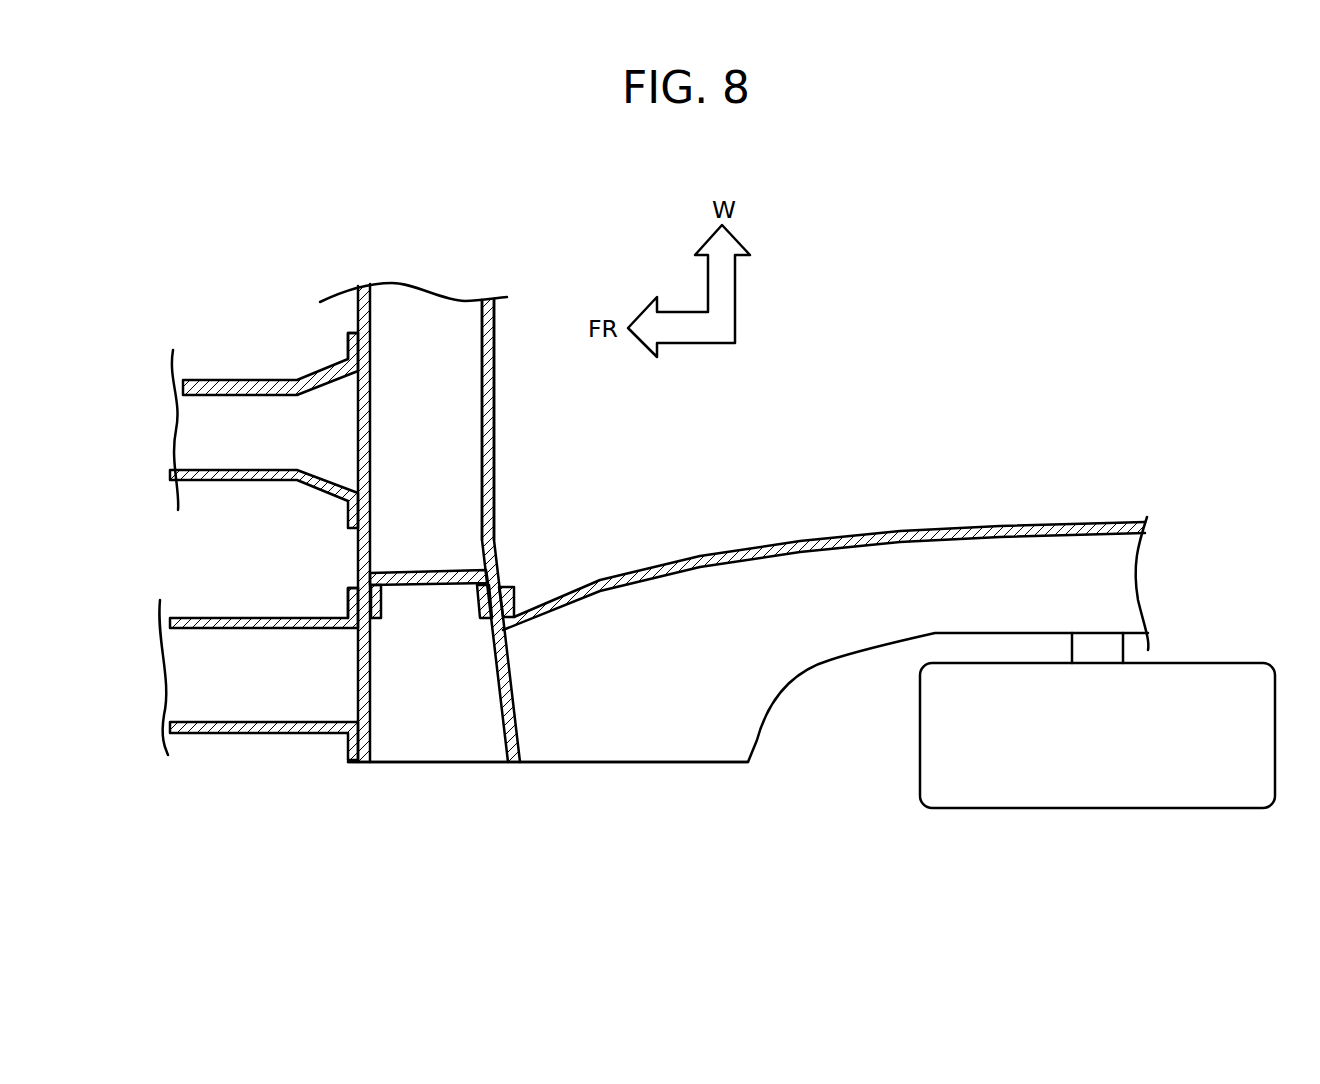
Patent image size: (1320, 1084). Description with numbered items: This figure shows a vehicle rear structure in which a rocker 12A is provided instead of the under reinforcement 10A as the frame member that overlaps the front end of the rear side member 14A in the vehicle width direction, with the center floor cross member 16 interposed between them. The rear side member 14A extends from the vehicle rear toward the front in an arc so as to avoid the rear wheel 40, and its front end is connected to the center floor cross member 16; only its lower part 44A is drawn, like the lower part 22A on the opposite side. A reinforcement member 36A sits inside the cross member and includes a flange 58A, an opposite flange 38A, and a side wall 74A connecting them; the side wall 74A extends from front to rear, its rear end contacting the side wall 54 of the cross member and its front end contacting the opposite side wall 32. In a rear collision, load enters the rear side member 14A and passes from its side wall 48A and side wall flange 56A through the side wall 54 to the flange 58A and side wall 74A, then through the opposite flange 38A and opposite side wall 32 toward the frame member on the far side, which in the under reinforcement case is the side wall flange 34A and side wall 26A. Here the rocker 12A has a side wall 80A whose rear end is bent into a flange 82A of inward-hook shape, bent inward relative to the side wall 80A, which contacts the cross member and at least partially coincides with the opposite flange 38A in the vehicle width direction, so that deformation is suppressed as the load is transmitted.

The under reinforcement 10A is at (242, 434).
The lower part of under reinforcement 22A is at (264, 405).
The side wall 26A is at (222, 380).
The side wall flange 34A is at (347, 350).
The rocker 12A is at (258, 733).
The side wall of rocker 80A is at (292, 628).
The flange of rocker 82A is at (348, 605).
The opposite side wall 32 is at (370, 437).
The reinforcement member 36A is at (480, 551).
The side wall 54 is at (495, 503).
The side wall 74A is at (437, 572).
The opposite flange 38A is at (383, 602).
The flange 58A is at (478, 605).
The side wall flange 56A is at (517, 605).
The side wall 48A is at (626, 576).
The rear side member 14A is at (748, 724).
The lower part of rear side member 44A is at (748, 639).
The center floor cross member 16 is at (548, 847).
The rear wheel 40 is at (1097, 810).